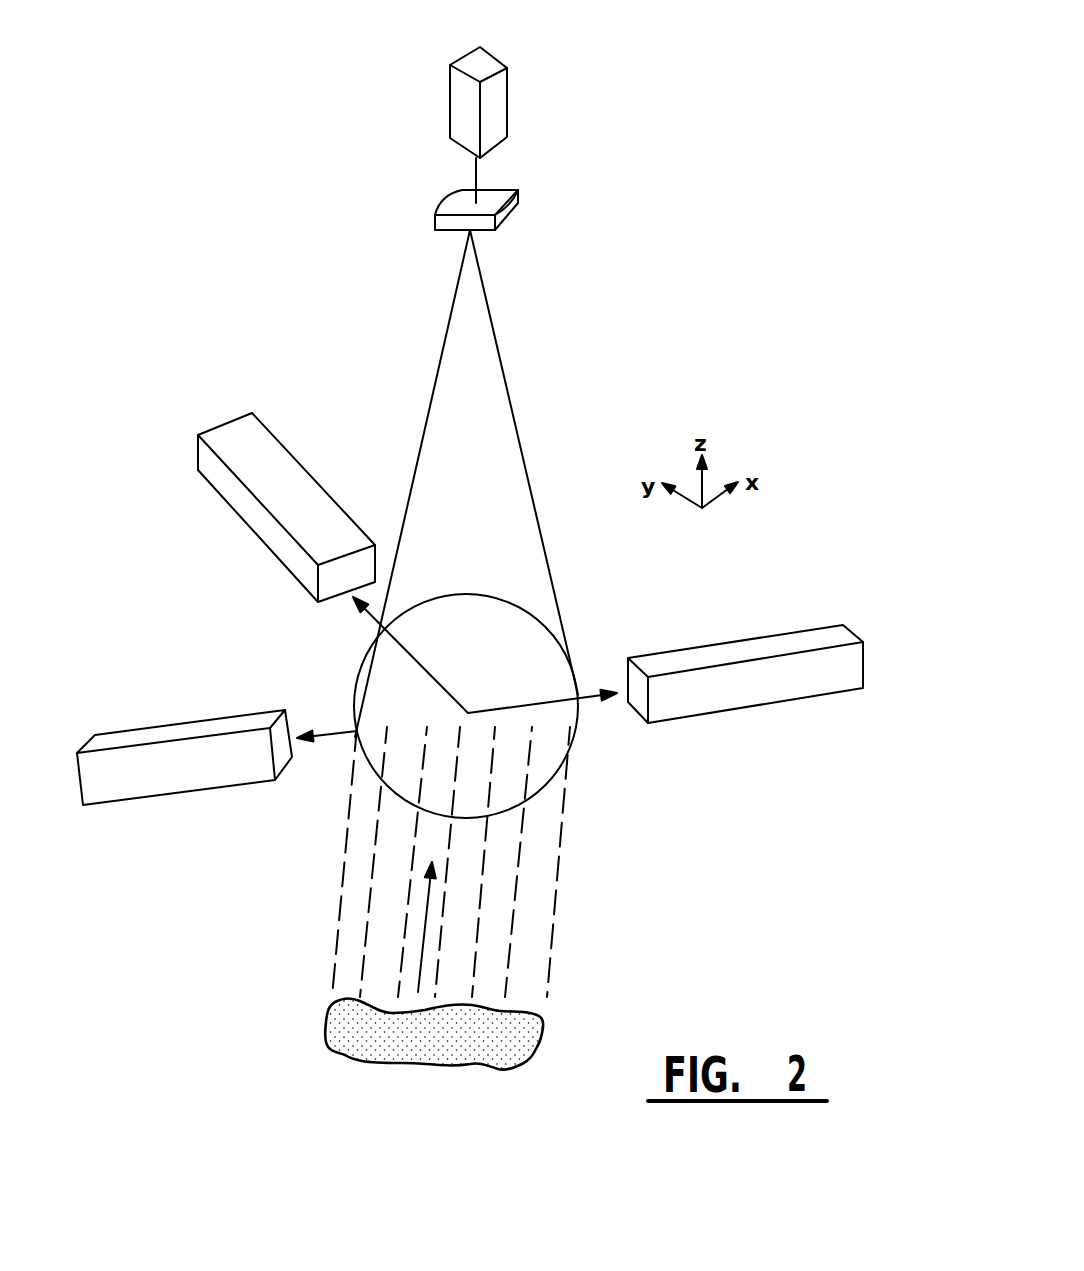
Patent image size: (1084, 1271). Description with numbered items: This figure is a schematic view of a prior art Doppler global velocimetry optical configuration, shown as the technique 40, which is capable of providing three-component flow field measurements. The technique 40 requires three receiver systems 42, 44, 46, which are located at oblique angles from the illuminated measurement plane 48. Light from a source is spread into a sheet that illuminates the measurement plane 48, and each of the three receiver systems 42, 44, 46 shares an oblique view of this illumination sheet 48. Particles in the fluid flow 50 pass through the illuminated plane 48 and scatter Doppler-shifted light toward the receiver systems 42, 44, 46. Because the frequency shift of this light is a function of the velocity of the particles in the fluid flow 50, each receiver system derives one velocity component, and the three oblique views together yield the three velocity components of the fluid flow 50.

The technique 40 is at (628, 296).
The receiver system 42 is at (218, 718).
The receiver system 44 is at (745, 638).
The receiver system 46 is at (292, 458).
The illuminated measurement plane 48 is at (573, 738).
The fluid flow 50 is at (568, 882).